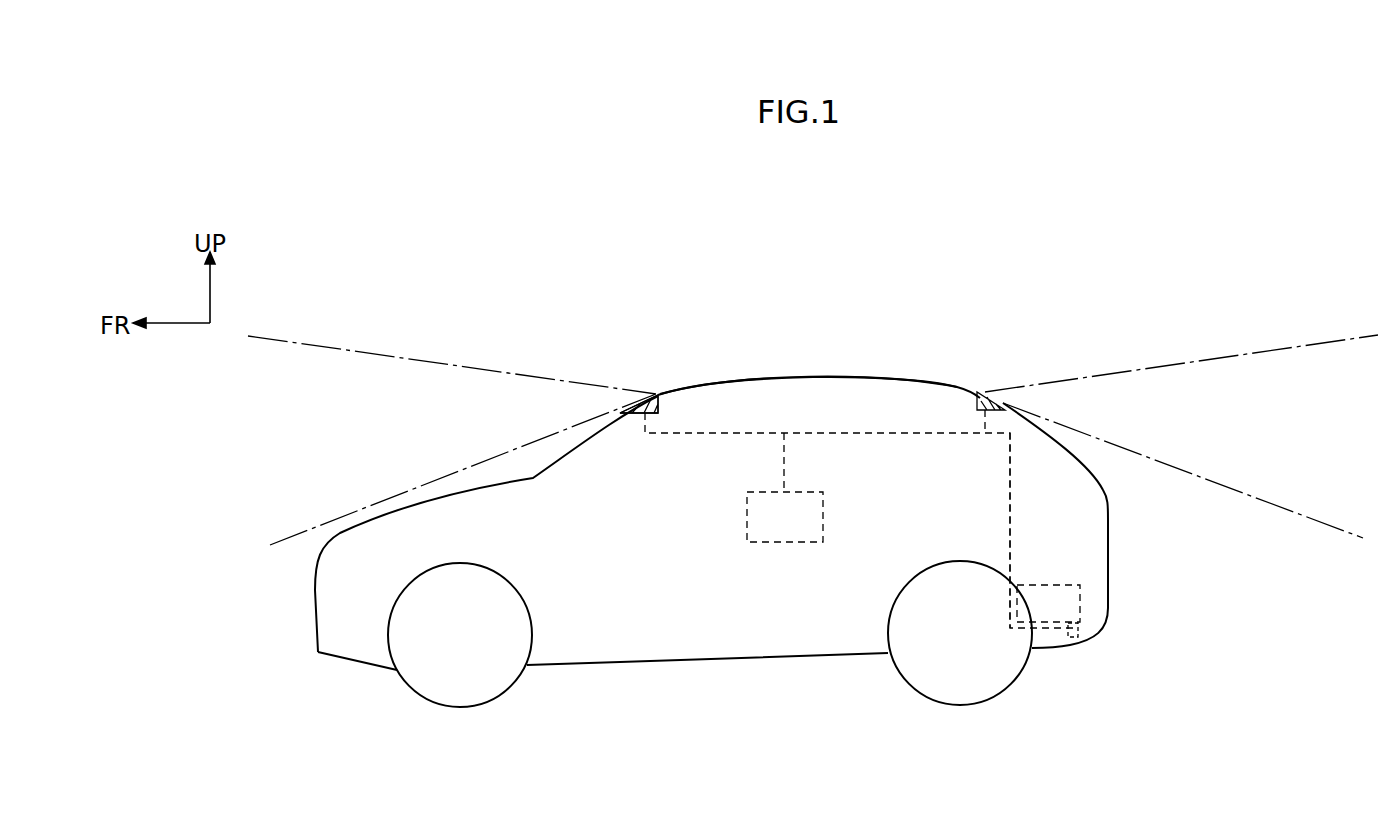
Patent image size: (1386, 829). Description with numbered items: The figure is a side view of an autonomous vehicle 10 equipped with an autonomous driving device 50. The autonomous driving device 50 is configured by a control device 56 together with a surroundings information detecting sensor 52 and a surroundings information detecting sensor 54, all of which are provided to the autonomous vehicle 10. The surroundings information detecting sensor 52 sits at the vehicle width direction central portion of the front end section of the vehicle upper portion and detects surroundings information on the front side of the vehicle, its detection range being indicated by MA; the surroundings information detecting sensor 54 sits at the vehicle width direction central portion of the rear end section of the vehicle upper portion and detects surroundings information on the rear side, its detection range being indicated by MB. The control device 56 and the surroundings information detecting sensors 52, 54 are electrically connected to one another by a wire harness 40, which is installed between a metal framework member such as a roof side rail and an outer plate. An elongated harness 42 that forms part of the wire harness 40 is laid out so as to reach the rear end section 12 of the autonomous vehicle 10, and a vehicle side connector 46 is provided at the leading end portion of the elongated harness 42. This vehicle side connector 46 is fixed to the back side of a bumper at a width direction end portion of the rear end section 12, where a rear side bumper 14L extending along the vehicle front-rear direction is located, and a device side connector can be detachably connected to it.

The autonomous vehicle 10 is at (807, 374).
The rear end section 12 is at (1110, 587).
The rear side bumper 14L is at (1047, 585).
The wire harness 40 is at (830, 433).
The elongated harness 42 is at (1010, 540).
The vehicle side connector 46 is at (1077, 630).
The autonomous driving device 50 is at (805, 677).
The surroundings information detecting sensor 52 is at (660, 401).
The surroundings information detecting sensor 54 is at (977, 398).
The control device 56 is at (773, 542).
The detection range MA is at (420, 358).
The detection range MB is at (1158, 365).